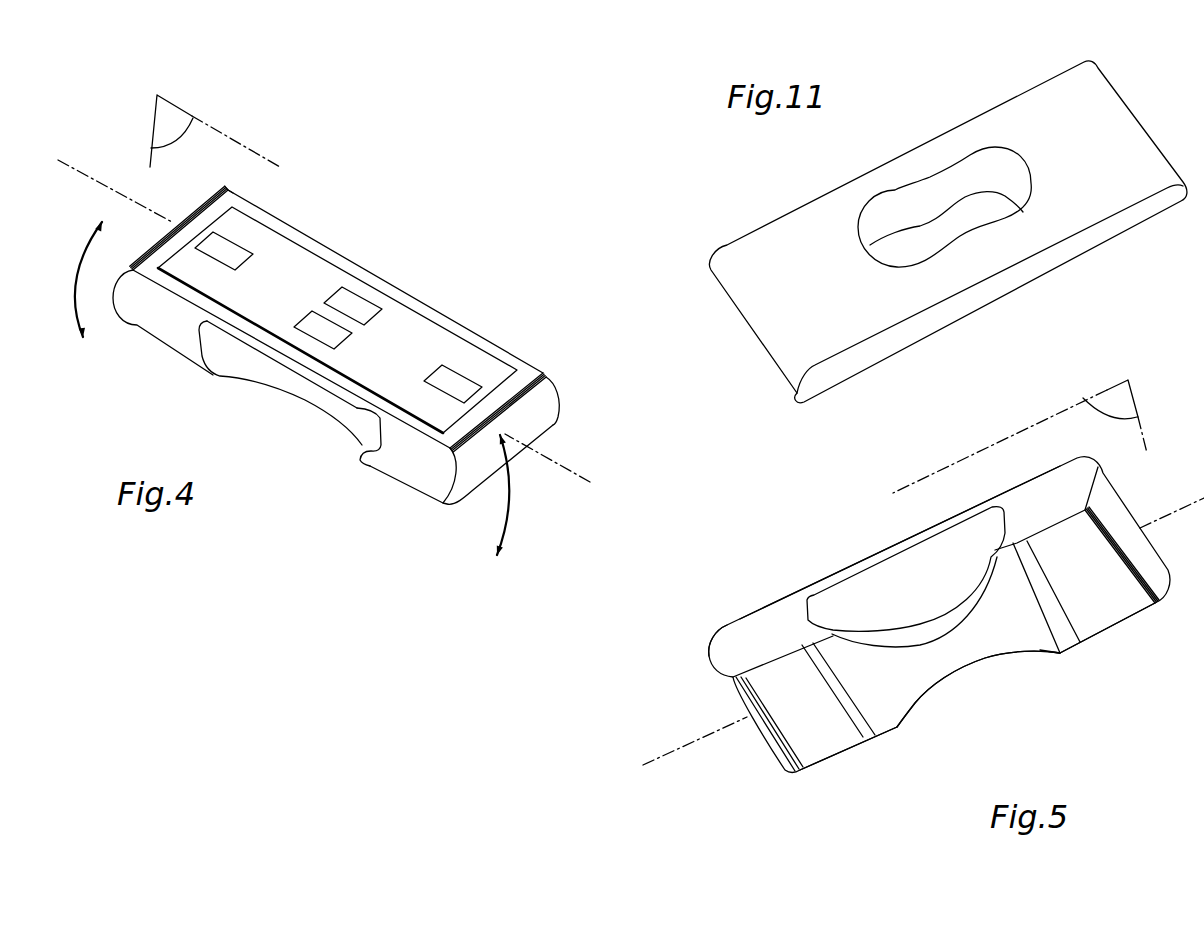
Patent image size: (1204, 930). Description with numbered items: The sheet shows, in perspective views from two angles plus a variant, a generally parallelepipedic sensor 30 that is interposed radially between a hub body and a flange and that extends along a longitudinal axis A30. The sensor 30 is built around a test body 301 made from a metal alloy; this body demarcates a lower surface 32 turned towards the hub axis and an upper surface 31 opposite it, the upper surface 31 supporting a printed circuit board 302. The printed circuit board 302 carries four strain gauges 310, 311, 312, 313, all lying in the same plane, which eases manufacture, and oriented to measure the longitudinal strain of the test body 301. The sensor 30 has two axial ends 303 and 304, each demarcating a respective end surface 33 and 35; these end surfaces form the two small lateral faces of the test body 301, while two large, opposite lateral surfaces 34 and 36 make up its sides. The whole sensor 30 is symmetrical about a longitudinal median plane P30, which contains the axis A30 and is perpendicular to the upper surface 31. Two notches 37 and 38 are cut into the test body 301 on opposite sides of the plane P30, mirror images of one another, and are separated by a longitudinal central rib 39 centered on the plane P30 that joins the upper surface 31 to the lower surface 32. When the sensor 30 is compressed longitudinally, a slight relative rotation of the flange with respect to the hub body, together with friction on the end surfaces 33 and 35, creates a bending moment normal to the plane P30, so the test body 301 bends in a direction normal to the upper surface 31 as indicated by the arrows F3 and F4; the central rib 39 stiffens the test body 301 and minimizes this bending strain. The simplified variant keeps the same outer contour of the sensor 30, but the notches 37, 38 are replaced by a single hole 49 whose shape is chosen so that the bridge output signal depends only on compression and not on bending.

In FIG. 4, the sensor 30 is at (348, 339).
In FIG. 5, the sensor 30 is at (867, 588).
In FIG. 11, the sensor 30 is at (947, 232).
In FIG. 4, the upper surface 31 is at (525, 368).
In FIG. 5, the upper surface 31 is at (1003, 490).
In FIG. 4, the lower surface 32 is at (400, 486).
In FIG. 5, the lower surface 32 is at (1075, 560).
In FIG. 4, the end surface 33 is at (177, 215).
In FIG. 5, the end surface 33 is at (718, 688).
In FIG. 4, the lateral surface 34 is at (168, 312).
In FIG. 5, the lateral surface 34 is at (770, 628).
In FIG. 4, the end surface 35 is at (545, 385).
In FIG. 5, the end surface 35 is at (1135, 507).
In FIG. 5, the lateral surface 36 is at (838, 758).
In FIG. 4, the notch 37 is at (290, 403).
In FIG. 5, the notch 37 is at (897, 597).
In FIG. 5, the notch 38 is at (1013, 676).
In FIG. 5, the longitudinal central rib 39 is at (953, 657).
In FIG. 11, the hole 49 is at (980, 180).
In FIG. 4, the test body 301 is at (427, 468).
In FIG. 4, the printed circuit board 302 is at (392, 386).
In FIG. 4, the axial end 303 is at (211, 189).
In FIG. 5, the axial end 303 is at (717, 650).
In FIG. 4, the axial end 304 is at (545, 410).
In FIG. 4, the strain gauge 310 is at (358, 307).
In FIG. 4, the strain gauge 311 is at (452, 383).
In FIG. 4, the strain gauge 312 is at (313, 327).
In FIG. 4, the strain gauge 313 is at (240, 252).
In FIG. 4, the longitudinal median plane P30 is at (215, 131).
In FIG. 5, the longitudinal median plane P30 is at (1020, 436).
In FIG. 4, the longitudinal axis A30 is at (340, 327).
In FIG. 5, the longitudinal axis A30 is at (637, 712).
In FIG. 4, the arrow F3 is at (79, 279).
In FIG. 4, the arrow F4 is at (516, 495).